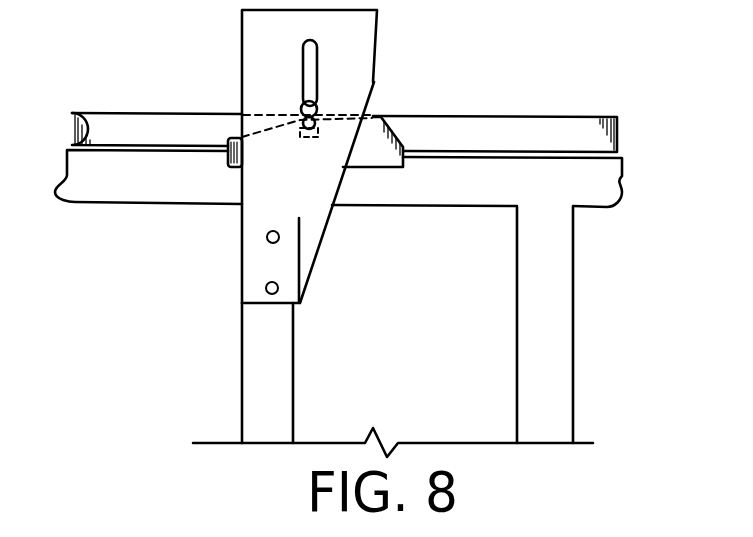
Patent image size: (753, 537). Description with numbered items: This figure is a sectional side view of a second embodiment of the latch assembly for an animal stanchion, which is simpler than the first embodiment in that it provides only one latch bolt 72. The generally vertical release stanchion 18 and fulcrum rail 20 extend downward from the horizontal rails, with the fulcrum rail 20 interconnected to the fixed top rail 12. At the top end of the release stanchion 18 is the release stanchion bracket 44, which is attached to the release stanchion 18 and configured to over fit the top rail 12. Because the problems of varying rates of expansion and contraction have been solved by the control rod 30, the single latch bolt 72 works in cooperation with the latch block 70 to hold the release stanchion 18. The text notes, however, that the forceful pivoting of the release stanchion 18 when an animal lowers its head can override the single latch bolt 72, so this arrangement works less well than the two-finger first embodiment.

The top rail 12 is at (182, 195).
The release stanchion 18 is at (280, 393).
The fulcrum rail 20 is at (562, 370).
The control rod 30 is at (442, 125).
The release stanchion bracket 44 is at (308, 247).
The latch block 70 is at (380, 155).
The latch bolt 72 is at (323, 98).